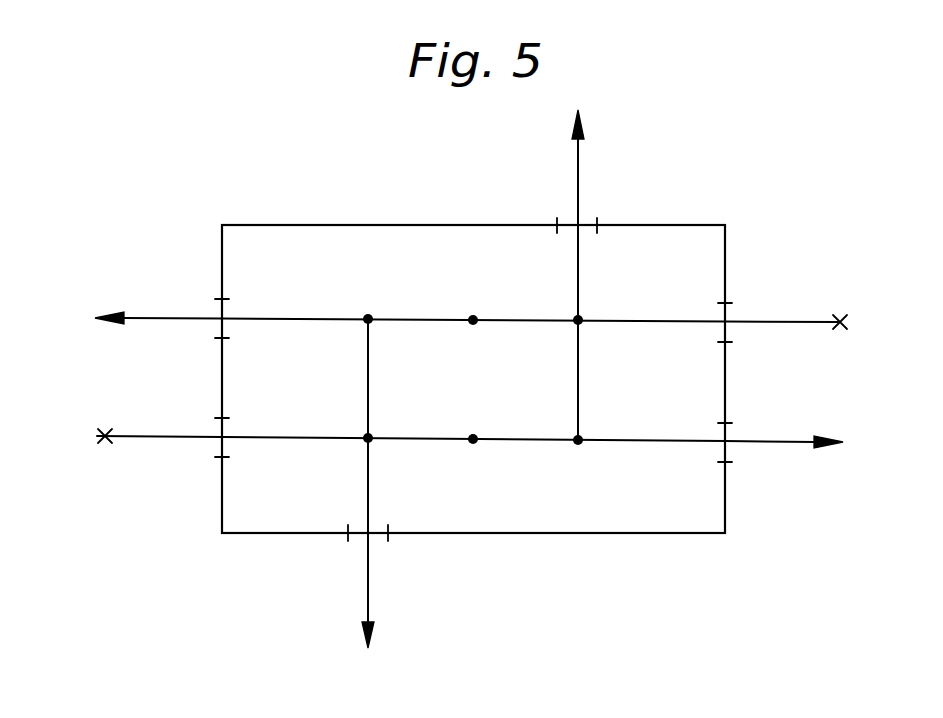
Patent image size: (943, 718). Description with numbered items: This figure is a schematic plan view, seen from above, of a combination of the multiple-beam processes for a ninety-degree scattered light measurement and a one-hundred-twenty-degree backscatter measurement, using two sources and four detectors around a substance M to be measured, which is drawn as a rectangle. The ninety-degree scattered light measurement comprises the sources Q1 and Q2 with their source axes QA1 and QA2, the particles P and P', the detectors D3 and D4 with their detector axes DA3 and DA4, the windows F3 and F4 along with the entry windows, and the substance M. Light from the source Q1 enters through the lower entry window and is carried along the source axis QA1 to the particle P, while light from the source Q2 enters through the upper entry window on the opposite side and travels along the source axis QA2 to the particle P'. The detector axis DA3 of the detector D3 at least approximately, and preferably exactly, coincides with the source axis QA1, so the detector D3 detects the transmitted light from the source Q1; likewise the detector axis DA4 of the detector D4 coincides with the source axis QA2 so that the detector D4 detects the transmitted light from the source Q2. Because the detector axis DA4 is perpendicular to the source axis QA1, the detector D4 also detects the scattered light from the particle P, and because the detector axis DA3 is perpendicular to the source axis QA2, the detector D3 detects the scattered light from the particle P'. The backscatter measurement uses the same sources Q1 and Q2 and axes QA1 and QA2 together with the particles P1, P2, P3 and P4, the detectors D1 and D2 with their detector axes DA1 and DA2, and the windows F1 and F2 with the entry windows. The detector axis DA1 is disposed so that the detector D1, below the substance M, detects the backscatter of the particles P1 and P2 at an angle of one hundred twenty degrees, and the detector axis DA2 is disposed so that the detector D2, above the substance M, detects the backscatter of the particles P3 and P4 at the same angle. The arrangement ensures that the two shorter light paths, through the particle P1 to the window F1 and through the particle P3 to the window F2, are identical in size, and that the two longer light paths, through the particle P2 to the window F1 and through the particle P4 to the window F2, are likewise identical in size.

The substance to be measured M is at (344, 231).
The detector D1 is at (368, 652).
The detector D2 is at (577, 110).
The detector D3 is at (853, 443).
The detector D4 is at (89, 314).
The detector axis DA1 is at (370, 593).
The detector axis DA2 is at (580, 168).
The detector axis DA3 is at (792, 444).
The detector axis DA4 is at (155, 317).
The window F1 is at (356, 538).
The window F2 is at (561, 230).
The window F3 is at (727, 433).
The window F4 is at (220, 331).
The source Q1 is at (83, 434).
The source Q2 is at (863, 324).
The source axis QA1 is at (158, 435).
The source axis QA2 is at (792, 324).
The particle P is at (473, 418).
The particle P' is at (476, 298).
The particle P1 is at (366, 436).
The particle P2 is at (368, 315).
The particle P3 is at (580, 316).
The particle P4 is at (580, 436).